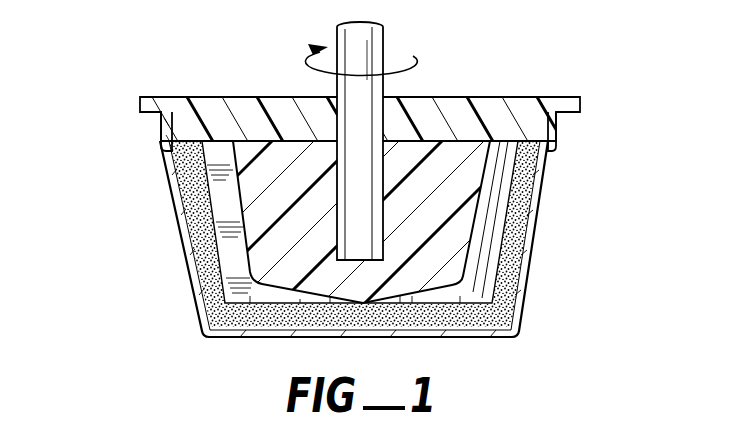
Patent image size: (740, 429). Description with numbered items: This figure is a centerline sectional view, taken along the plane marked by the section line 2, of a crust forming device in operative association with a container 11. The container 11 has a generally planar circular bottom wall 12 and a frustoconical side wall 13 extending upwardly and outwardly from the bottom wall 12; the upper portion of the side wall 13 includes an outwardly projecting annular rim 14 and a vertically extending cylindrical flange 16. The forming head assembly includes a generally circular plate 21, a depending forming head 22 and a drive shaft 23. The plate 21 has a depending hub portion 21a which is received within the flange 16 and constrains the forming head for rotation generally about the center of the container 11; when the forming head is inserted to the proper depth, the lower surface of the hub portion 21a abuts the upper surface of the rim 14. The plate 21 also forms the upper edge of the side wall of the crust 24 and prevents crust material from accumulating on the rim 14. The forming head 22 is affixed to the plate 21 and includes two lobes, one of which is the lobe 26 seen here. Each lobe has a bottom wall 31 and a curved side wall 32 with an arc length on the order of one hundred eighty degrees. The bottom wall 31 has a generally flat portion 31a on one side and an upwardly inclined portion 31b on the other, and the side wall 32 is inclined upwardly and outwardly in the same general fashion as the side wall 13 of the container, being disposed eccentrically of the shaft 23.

The section line 2 is at (84, 140).
The container 11 is at (542, 208).
The bottom wall 12 is at (445, 331).
The side wall 13 is at (193, 228).
The rim 14 is at (163, 151).
The flange 16 is at (558, 132).
The plate 21 is at (196, 110).
The hub portion 21a is at (259, 135).
The forming head 22 is at (444, 166).
The drive shaft 23 is at (367, 38).
The crust 24 is at (511, 335).
The lobe 26 is at (272, 263).
The bottom wall 31 is at (383, 318).
The flat portion 31a is at (300, 328).
The inclined portion 31b is at (498, 291).
The side wall 32 is at (205, 267).